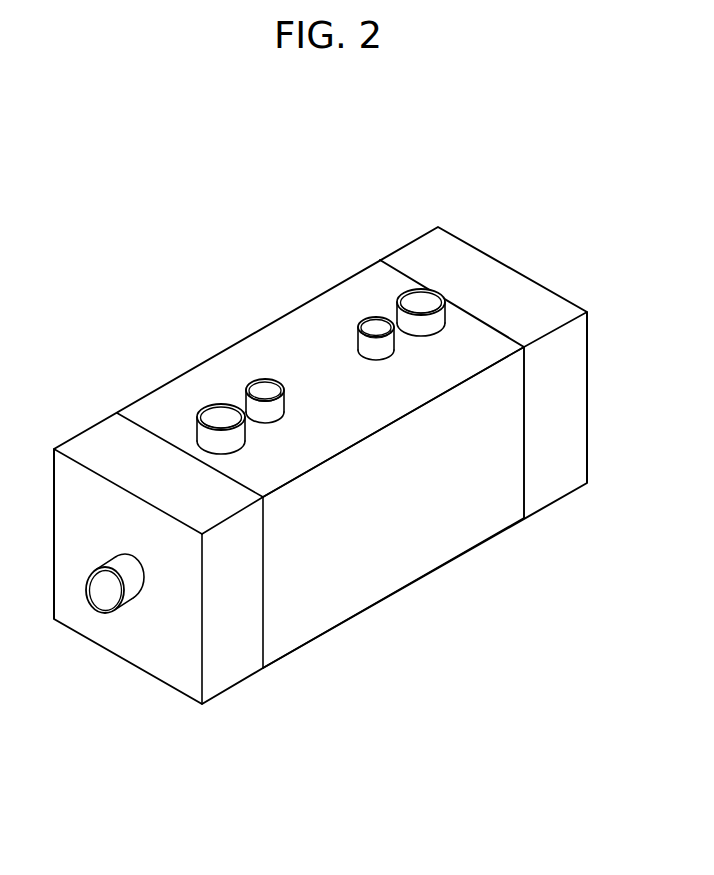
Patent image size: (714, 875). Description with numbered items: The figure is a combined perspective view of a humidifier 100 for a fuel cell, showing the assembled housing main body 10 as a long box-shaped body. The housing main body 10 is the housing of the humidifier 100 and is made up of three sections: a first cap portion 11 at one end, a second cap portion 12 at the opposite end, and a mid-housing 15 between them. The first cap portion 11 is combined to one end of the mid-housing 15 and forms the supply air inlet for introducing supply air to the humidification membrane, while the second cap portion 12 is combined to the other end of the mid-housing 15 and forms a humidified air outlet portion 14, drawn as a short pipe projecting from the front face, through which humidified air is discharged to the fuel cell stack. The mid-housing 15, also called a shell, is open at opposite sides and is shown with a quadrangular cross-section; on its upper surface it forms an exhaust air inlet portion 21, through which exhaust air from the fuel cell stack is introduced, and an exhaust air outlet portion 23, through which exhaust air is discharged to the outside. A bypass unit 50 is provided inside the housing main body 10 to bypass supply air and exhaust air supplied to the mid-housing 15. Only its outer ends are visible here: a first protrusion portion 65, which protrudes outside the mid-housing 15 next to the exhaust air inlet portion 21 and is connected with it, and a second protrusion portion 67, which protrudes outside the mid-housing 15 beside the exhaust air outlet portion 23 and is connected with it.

The humidifier 100 is at (146, 156).
The housing main body 10 is at (544, 248).
The first cap portion 11 is at (562, 481).
The second cap portion 12 is at (227, 675).
The humidified air outlet portion 14 is at (105, 597).
The mid-housing 15 is at (393, 578).
The exhaust air inlet portion 21 is at (209, 417).
The exhaust air outlet portion 23 is at (427, 297).
The bypass unit 50 is at (267, 360).
The first protrusion portion 65 is at (255, 393).
The second protrusion portion 67 is at (372, 325).